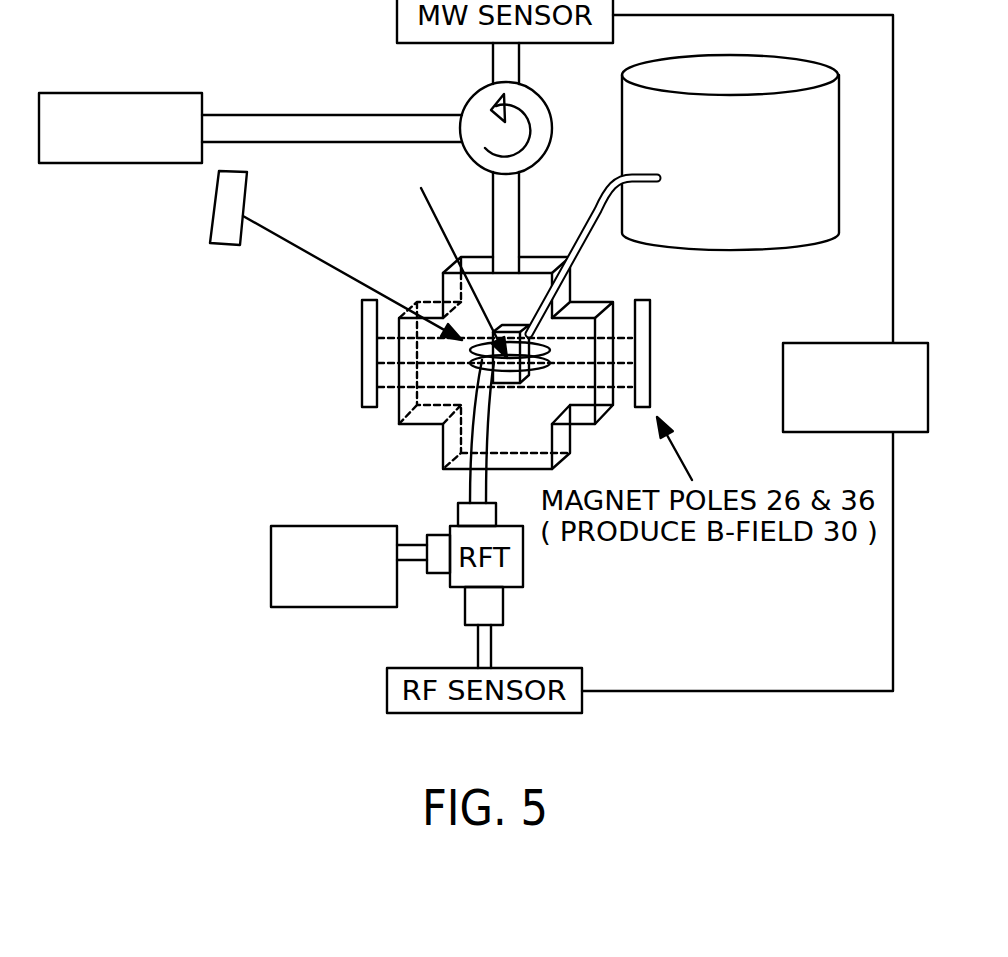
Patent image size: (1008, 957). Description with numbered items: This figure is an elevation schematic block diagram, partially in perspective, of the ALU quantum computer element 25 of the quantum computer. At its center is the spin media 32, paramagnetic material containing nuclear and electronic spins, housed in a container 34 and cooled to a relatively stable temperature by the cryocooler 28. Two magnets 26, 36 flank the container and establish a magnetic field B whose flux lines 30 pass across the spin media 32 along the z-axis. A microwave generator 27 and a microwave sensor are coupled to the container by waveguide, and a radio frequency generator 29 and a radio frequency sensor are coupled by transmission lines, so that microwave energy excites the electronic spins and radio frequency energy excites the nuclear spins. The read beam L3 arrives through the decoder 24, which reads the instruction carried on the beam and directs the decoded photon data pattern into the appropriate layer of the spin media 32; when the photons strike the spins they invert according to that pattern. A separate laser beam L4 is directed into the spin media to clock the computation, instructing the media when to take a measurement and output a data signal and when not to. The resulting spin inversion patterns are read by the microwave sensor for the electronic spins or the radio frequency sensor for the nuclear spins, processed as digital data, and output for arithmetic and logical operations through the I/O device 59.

The decoder 24 is at (240, 198).
The ALU quantum computer element 25 is at (334, 387).
The magnet 26 is at (651, 350).
The microwave generator 27 is at (95, 93).
The cryocooler 28 is at (730, 152).
The RF generator 29 is at (338, 607).
The flux lines 30 is at (578, 391).
The spin media 32 is at (503, 370).
The container 34 is at (530, 242).
The magnet 36 is at (375, 407).
The I/O device 59 is at (853, 342).
The read beam L3 is at (352, 278).
The laser beam L4 is at (452, 273).